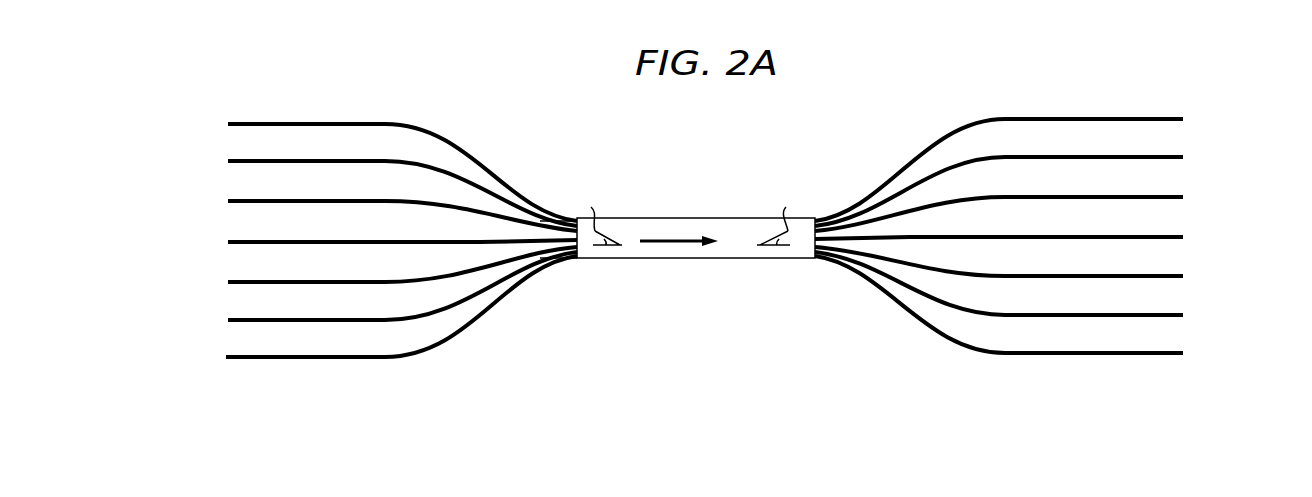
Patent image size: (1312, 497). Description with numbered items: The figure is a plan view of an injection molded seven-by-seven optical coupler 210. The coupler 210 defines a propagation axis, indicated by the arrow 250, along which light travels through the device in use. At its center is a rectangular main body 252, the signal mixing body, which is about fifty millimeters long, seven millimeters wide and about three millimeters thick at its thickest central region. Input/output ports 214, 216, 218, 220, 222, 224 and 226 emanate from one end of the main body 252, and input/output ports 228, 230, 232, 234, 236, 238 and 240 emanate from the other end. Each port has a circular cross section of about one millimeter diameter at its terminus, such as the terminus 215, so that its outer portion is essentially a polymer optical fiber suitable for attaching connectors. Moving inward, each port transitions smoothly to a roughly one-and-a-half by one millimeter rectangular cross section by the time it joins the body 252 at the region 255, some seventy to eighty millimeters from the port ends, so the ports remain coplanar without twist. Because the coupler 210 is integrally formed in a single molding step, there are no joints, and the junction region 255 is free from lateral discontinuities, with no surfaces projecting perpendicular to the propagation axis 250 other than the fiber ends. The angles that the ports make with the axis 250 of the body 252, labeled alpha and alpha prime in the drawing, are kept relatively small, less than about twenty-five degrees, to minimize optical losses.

The coupler 210 is at (650, 195).
The input/output port 214 is at (245, 357).
The terminus 215 is at (228, 357).
The input/output port 216 is at (228, 320).
The input/output port 218 is at (228, 282).
The input/output port 220 is at (228, 242).
The input/output port 222 is at (228, 201).
The input/output port 224 is at (228, 161).
The input/output port 226 is at (292, 124).
The input/output port 228 is at (1120, 119).
The input/output port 230 is at (1183, 157).
The input/output port 232 is at (1183, 197).
The input/output port 234 is at (1183, 236).
The input/output port 236 is at (1183, 276).
The input/output port 238 is at (1183, 315).
The input/output port 240 is at (1170, 353).
The propagation axis 250 is at (668, 241).
The main body 252 is at (740, 258).
The junction region 255 is at (537, 205).